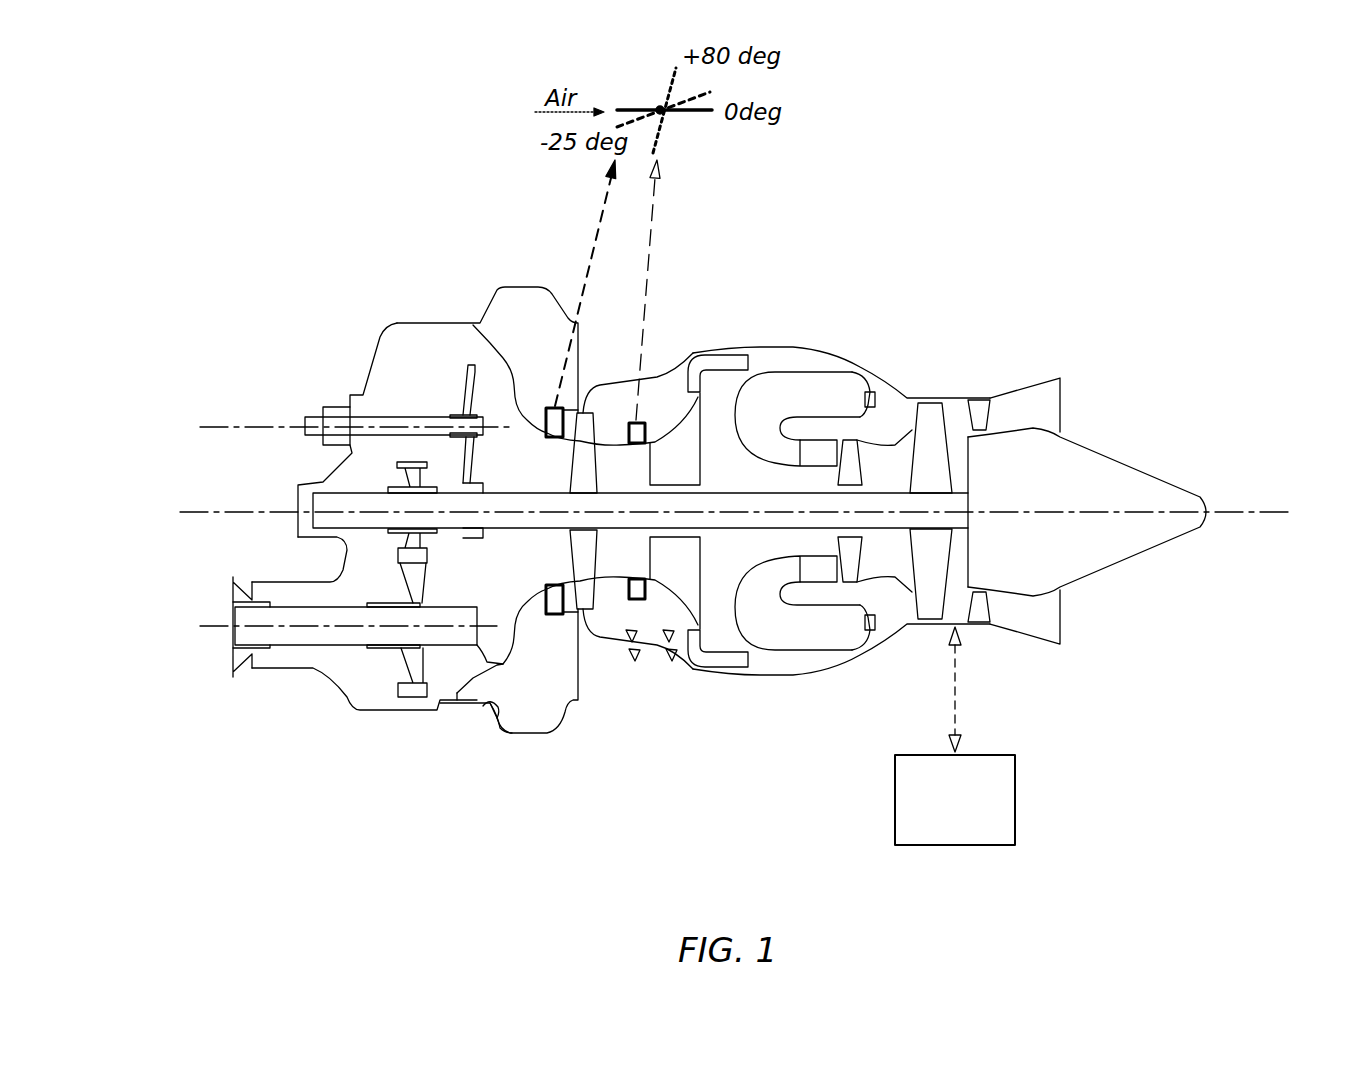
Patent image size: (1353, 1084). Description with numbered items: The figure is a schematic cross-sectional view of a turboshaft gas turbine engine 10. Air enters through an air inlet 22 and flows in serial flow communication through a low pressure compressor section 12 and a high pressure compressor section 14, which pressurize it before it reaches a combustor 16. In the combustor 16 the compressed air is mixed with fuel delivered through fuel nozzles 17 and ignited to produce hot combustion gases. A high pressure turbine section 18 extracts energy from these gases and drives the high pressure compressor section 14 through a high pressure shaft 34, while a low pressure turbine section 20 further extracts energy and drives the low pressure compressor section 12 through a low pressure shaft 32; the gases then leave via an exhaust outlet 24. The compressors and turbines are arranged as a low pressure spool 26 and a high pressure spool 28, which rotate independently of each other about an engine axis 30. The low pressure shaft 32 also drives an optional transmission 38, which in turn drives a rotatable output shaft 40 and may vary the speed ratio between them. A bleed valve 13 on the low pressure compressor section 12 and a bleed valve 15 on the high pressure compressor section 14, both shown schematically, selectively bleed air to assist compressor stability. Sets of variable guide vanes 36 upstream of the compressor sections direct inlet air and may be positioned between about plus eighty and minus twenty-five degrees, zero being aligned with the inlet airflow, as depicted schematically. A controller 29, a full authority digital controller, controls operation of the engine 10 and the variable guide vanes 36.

The gas turbine engine 10 is at (1031, 311).
The low pressure compressor section 12 is at (572, 352).
The bleed valve 13 is at (620, 597).
The high pressure compressor section 14 is at (678, 453).
The bleed valve 15 is at (657, 597).
The combustor 16 is at (813, 403).
The fuel nozzles 17 is at (876, 395).
The high pressure turbine section 18 is at (860, 563).
The low pressure turbine section 20 is at (932, 420).
The air inlet 22 is at (495, 727).
The exhaust outlet 24 is at (1043, 623).
The low pressure spool 26 is at (620, 610).
The high pressure spool 28 is at (717, 537).
The controller 29 is at (1017, 780).
The engine axis 30 is at (1267, 510).
The low pressure shaft 32 is at (523, 520).
The high pressure shaft 34 is at (770, 528).
The variable guide vanes 36 is at (546, 408).
The transmission 38 is at (382, 553).
The output shaft 40 is at (292, 633).